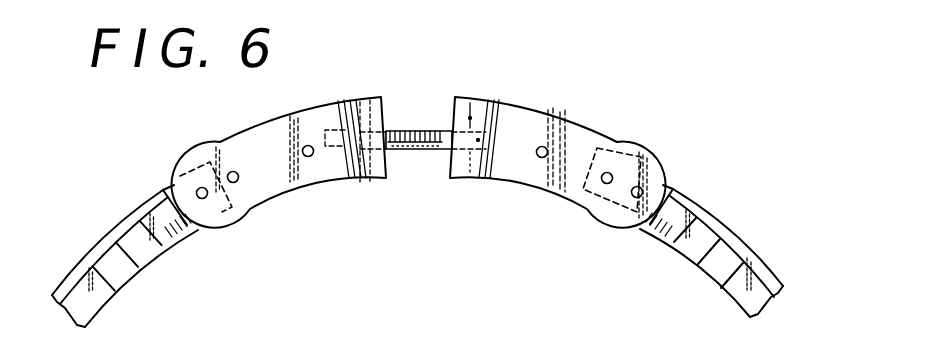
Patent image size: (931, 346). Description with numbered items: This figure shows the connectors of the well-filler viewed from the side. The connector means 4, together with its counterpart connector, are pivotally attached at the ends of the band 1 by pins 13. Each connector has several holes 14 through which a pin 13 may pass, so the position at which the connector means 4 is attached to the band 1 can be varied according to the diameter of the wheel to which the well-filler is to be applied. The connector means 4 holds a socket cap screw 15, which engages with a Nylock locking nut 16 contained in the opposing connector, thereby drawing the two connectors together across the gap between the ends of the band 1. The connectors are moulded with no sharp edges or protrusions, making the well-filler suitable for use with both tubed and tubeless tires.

The band 1 is at (114, 271).
The connector means 4 is at (577, 132).
The pin 13 is at (203, 199).
The holes 14 is at (306, 157).
The socket cap screw 15 is at (408, 130).
The locking nut 16 is at (372, 176).